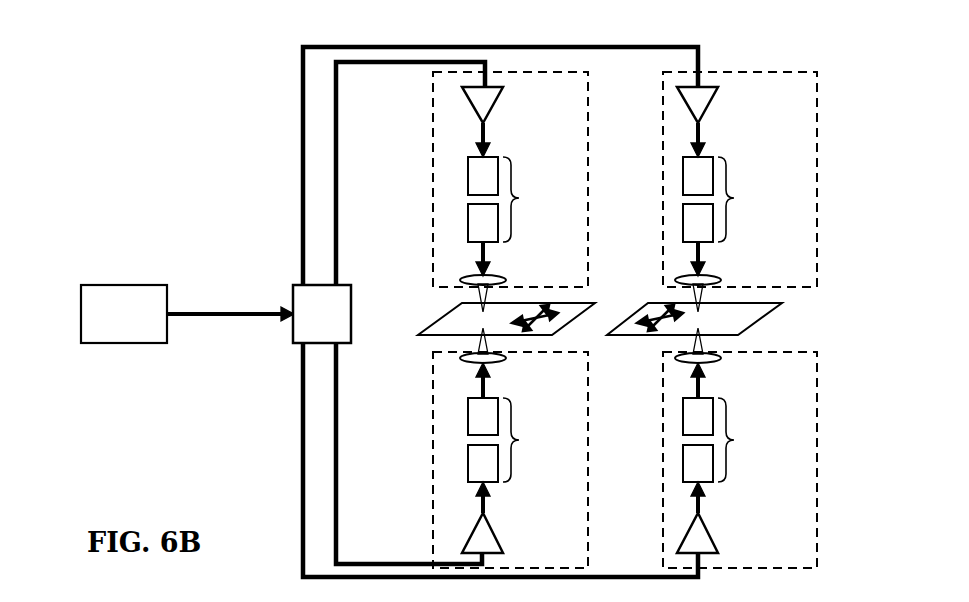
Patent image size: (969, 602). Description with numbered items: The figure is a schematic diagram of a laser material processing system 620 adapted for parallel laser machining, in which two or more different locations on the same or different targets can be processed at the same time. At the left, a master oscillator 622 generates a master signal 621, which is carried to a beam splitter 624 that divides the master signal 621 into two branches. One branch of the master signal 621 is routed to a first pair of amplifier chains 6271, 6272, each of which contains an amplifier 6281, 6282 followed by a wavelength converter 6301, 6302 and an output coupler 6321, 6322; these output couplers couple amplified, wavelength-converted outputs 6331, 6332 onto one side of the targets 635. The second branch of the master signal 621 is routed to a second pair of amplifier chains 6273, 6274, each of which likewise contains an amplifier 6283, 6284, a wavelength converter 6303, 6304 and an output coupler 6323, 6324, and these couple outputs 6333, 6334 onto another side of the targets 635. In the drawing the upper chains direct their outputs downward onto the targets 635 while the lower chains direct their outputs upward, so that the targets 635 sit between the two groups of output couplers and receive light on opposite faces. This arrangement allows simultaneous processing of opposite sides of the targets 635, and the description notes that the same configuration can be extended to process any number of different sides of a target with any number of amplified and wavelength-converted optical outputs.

The laser material processing system 620 is at (126, 105).
The master signal 621 is at (216, 309).
The master oscillator 622 is at (122, 284).
The beam splitter 624 is at (294, 286).
The amplifier chain 1 6271 is at (433, 180).
The amplifier chain 2 6272 is at (663, 180).
The amplifier chain 3 6273 is at (433, 462).
The amplifier chain 4 6274 is at (663, 462).
The amplifier 6281 is at (497, 110).
The amplifier 6282 is at (718, 106).
The amplifier 6283 is at (497, 540).
The amplifier 6284 is at (718, 540).
The wavelength converter 6301 is at (519, 198).
The wavelength converter 6302 is at (734, 198).
The wavelength converter 6303 is at (519, 440).
The wavelength converter 6304 is at (734, 440).
The output coupler 6321 is at (506, 280).
The output coupler 6322 is at (721, 280).
The output coupler 6323 is at (506, 358).
The output coupler 6324 is at (721, 358).
The output 6331 is at (477, 292).
The output 6332 is at (692, 292).
The output 6333 is at (477, 344).
The output 6334 is at (692, 345).
The target 635 is at (436, 320).